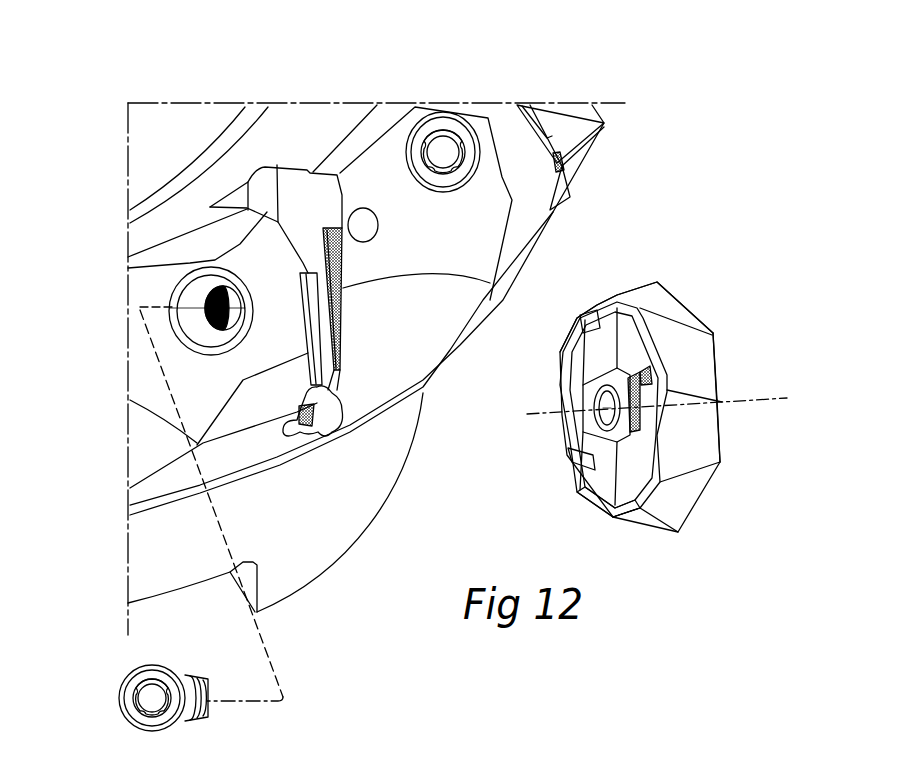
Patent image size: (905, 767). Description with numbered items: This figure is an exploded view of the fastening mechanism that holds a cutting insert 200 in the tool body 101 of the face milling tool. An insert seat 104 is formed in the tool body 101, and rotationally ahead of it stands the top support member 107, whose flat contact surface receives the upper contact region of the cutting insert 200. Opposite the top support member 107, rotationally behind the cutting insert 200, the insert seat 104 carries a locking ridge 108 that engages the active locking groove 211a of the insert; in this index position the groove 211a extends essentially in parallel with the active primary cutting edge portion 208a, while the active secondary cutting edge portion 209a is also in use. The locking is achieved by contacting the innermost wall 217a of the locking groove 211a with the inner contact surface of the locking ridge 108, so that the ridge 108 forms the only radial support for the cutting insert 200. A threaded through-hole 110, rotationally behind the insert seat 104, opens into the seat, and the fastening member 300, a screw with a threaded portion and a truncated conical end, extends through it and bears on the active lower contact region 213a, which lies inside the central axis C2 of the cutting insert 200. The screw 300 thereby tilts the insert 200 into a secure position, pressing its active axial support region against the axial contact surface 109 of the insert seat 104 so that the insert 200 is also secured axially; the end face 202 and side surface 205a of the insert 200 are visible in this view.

The tool body 101 is at (173, 117).
The insert seat 104 is at (297, 187).
The top support member 107 is at (331, 236).
The locking ridge 108 is at (308, 268).
The axial contact surface 109 is at (308, 414).
The threaded through-hole 110 is at (222, 294).
The cutting insert 200 is at (649, 359).
The insert end face 202 is at (603, 442).
The side surface 205a is at (702, 408).
The active primary cutting edge portion 208a is at (720, 372).
The active secondary cutting edge portion 209a is at (712, 333).
The active locking groove 211a is at (642, 378).
The active lower contact region 213a is at (585, 408).
The innermost wall 217a is at (637, 418).
The fastening member 300 is at (150, 694).
The central axis C2 is at (673, 400).